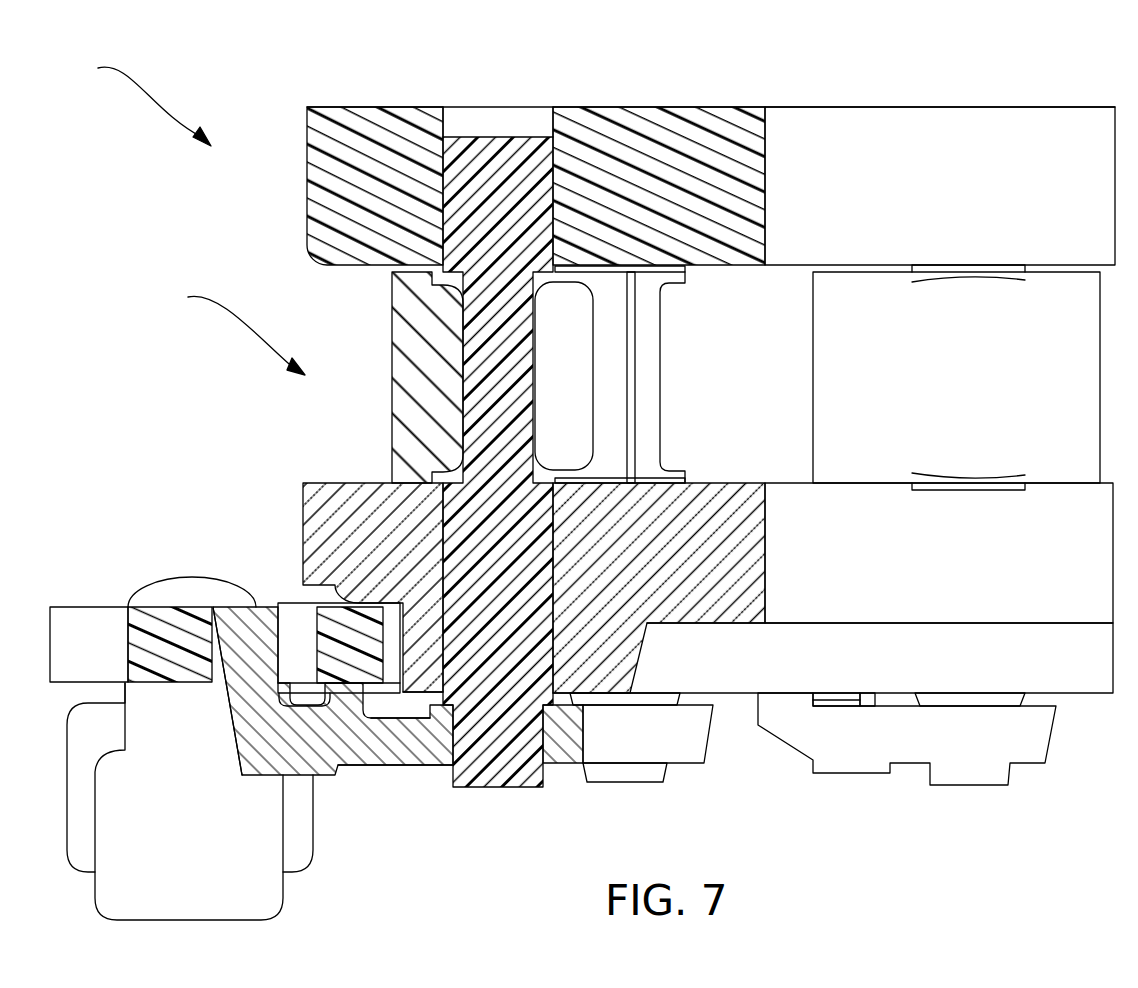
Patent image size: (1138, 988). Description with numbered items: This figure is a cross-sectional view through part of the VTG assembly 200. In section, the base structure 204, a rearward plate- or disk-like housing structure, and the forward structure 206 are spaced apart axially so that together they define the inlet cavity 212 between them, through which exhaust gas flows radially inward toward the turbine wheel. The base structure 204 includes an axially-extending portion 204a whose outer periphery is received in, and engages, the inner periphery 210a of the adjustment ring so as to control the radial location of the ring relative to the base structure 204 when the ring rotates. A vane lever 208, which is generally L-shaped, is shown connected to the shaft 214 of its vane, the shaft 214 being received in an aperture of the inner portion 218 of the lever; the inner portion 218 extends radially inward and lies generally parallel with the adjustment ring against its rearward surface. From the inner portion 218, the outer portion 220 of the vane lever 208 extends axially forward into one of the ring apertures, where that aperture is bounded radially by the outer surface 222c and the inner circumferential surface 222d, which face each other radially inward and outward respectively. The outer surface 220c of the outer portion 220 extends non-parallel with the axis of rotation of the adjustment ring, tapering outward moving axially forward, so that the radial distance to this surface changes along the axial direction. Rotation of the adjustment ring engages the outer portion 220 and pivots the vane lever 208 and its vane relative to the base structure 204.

The VTG assembly 200 is at (134, 98).
The base structure 204 is at (303, 530).
The axially-extending portion 204a is at (437, 690).
The forward structure 206 is at (307, 190).
The vane lever 208 is at (392, 345).
The inner periphery 210a is at (402, 720).
The inlet cavity 212 is at (454, 241).
The shaft 214 is at (490, 137).
The inner portion 218 is at (348, 765).
The outer portion 220 is at (227, 683).
The outer surface 220c is at (187, 708).
The outer surface 222c is at (222, 650).
The inner circumferential surface 222d is at (128, 607).